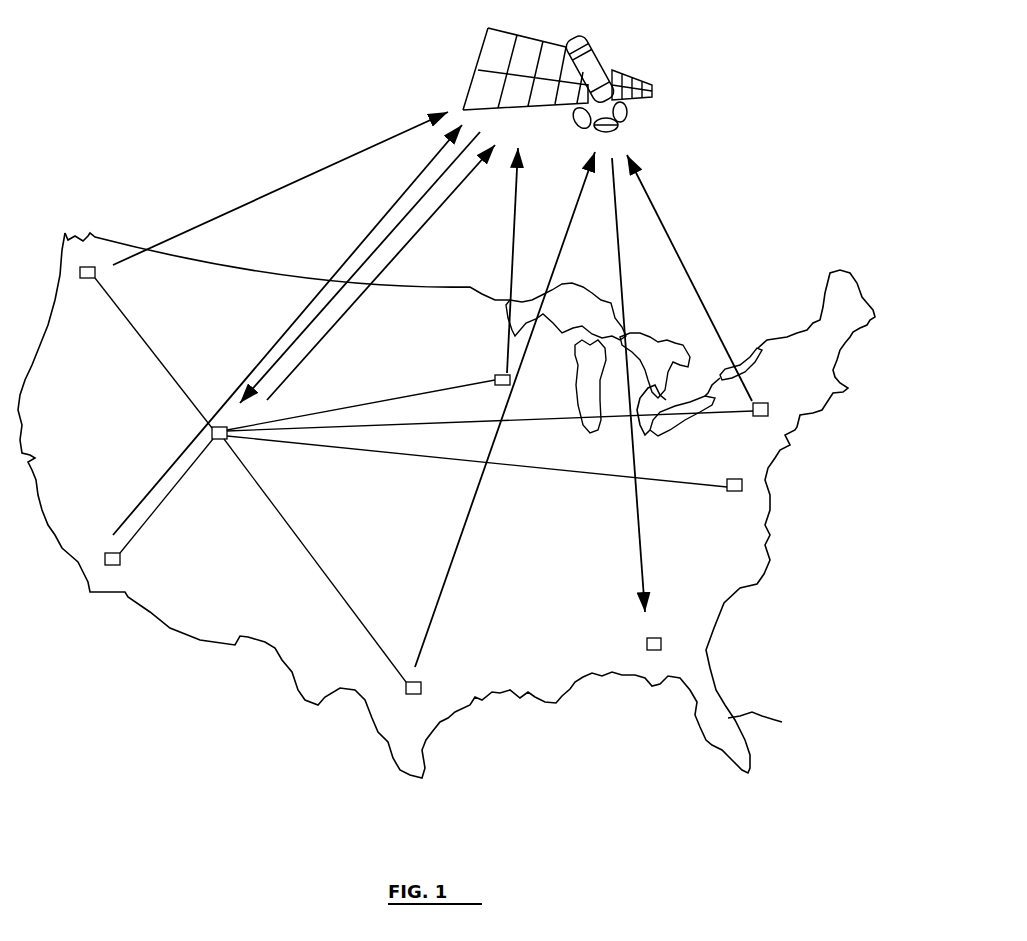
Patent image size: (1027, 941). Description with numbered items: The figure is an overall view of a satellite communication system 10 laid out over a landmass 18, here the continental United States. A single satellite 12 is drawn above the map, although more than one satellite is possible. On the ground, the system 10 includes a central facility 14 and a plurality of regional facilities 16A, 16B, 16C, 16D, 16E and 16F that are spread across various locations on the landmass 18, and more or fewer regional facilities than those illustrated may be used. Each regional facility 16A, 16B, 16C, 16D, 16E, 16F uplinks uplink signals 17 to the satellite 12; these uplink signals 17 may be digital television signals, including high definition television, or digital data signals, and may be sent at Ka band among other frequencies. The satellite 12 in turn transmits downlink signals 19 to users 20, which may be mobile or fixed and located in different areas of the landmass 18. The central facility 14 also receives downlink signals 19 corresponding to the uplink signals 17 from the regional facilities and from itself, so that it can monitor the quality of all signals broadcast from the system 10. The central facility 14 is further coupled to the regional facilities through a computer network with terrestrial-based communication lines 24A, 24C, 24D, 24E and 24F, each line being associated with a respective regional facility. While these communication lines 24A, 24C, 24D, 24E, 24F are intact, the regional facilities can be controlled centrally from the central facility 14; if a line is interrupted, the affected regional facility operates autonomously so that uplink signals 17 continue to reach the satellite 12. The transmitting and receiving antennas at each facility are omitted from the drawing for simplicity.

The communication system 10 is at (125, 153).
The satellite 12 is at (600, 58).
The central facility 14 is at (220, 440).
The regional facility 16A is at (92, 262).
The regional facility 16B is at (112, 566).
The regional facility 16C is at (500, 374).
The regional facility 16D is at (765, 402).
The regional facility 16E is at (733, 478).
The regional facility 16F is at (418, 682).
The uplink signals 17 is at (276, 190).
The landmass 18 is at (748, 714).
The downlink signals 19 is at (417, 200).
The users 20 is at (650, 638).
The communication line 24A is at (148, 344).
The communication line 24C is at (345, 408).
The communication line 24D is at (545, 418).
The communication line 24E is at (477, 480).
The communication line 24F is at (290, 527).